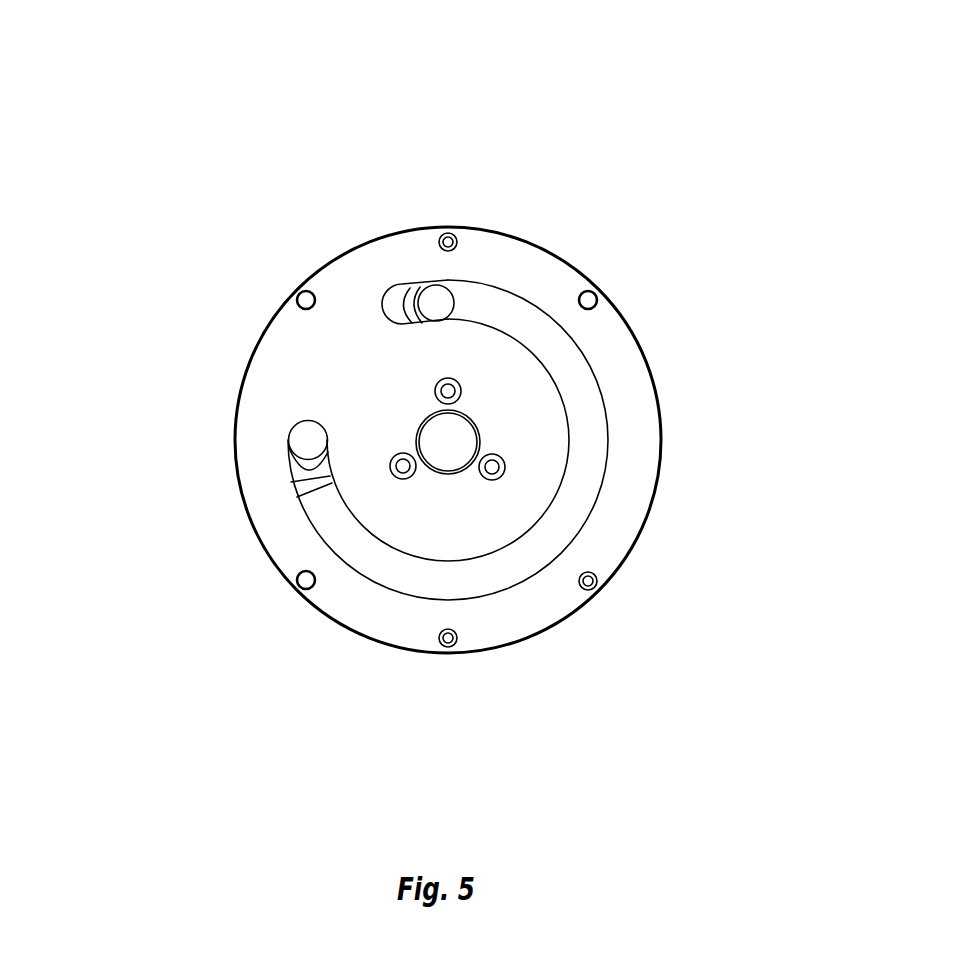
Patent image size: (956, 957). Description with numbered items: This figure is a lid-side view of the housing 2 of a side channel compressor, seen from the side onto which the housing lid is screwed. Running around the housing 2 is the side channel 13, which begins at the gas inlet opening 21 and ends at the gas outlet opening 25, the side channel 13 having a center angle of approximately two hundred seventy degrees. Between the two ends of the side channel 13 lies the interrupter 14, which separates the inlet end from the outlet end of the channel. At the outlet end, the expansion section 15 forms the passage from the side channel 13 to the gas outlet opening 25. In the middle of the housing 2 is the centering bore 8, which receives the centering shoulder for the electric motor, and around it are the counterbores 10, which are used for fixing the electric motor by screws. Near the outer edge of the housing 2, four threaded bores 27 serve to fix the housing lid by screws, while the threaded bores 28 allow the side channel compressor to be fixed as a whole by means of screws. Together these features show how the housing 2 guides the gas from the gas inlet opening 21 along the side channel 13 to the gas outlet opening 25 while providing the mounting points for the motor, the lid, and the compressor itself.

The housing 2 is at (622, 426).
The centering bore 8 is at (450, 441).
The counterbores 10 is at (492, 467).
The side channel 13 is at (562, 365).
The interrupter 14 is at (333, 372).
The expansion section 15 is at (310, 478).
The gas inlet opening 21 is at (437, 300).
The gas outlet opening 25 is at (308, 439).
The threaded bores 27 is at (598, 585).
The threaded bores 28 is at (452, 644).